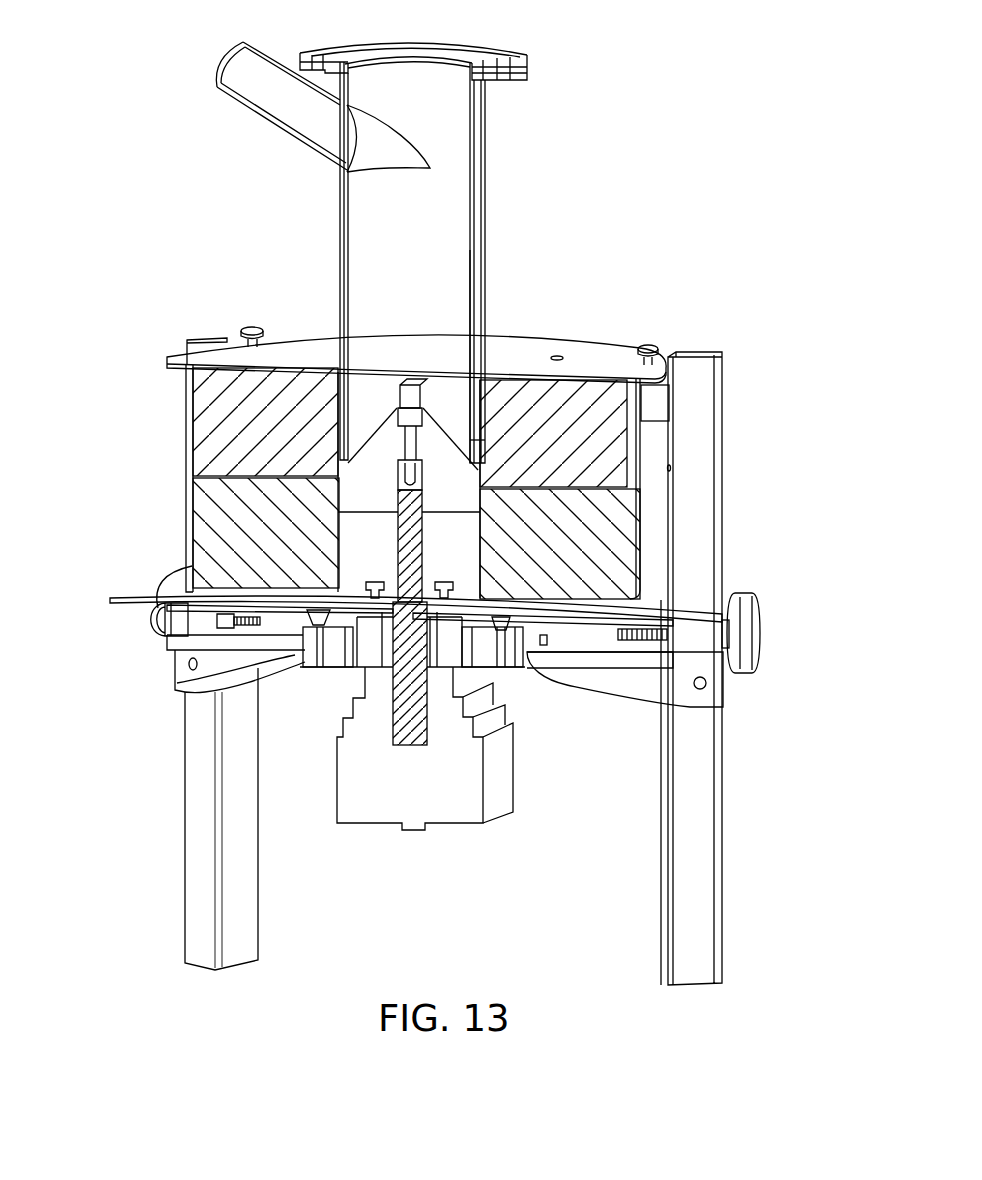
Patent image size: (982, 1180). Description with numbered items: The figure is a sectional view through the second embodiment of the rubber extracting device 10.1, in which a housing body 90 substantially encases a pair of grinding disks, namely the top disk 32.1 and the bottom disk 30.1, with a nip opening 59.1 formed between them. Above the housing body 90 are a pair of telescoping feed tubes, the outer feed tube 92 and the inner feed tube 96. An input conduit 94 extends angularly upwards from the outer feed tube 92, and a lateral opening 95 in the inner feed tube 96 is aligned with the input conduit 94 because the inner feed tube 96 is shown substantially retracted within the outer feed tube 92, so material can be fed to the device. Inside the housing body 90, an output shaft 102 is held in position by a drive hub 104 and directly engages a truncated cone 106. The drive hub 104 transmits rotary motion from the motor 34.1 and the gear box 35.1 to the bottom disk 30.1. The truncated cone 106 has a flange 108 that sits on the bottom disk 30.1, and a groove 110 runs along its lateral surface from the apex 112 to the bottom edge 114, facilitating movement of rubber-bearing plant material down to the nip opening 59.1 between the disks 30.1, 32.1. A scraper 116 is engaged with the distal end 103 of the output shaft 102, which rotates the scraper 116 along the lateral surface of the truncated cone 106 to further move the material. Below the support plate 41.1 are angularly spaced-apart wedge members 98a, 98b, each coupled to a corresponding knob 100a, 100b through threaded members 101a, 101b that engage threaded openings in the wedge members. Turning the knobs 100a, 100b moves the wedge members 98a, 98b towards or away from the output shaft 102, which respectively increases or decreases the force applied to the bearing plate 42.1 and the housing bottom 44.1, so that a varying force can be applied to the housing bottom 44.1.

The rubber extracting device 10.1 is at (170, 212).
The outer feed tube 92 is at (485, 202).
The input conduit 94 is at (250, 108).
The lateral opening 95 is at (388, 152).
The inner feed tube 96 is at (473, 257).
The scraper 116 is at (478, 340).
The apex 112 is at (398, 468).
The distal end 103 is at (348, 460).
The output shaft 102 is at (403, 551).
The housing body 90 is at (186, 434).
The top disk 32.1 is at (228, 399).
The bottom disk 30.1 is at (230, 513).
The groove 110 is at (470, 422).
The drive hub 104 is at (470, 563).
The nip opening 59.1 is at (483, 475).
The truncated cone 106 is at (373, 470).
The bottom edge 114 is at (483, 486).
The flange 108 is at (400, 516).
The gear box 35.1 is at (363, 647).
The motor 34.1 is at (388, 793).
The housing bottom 44.1 is at (652, 595).
The support plate 41.1 is at (563, 627).
The knob 100a is at (162, 614).
The knob 100b is at (750, 633).
The threaded member 101a is at (245, 627).
The threaded member 101b is at (672, 655).
The wedge member 98a is at (287, 630).
The wedge member 98b is at (588, 640).
The bearing plate 42.1 is at (643, 700).